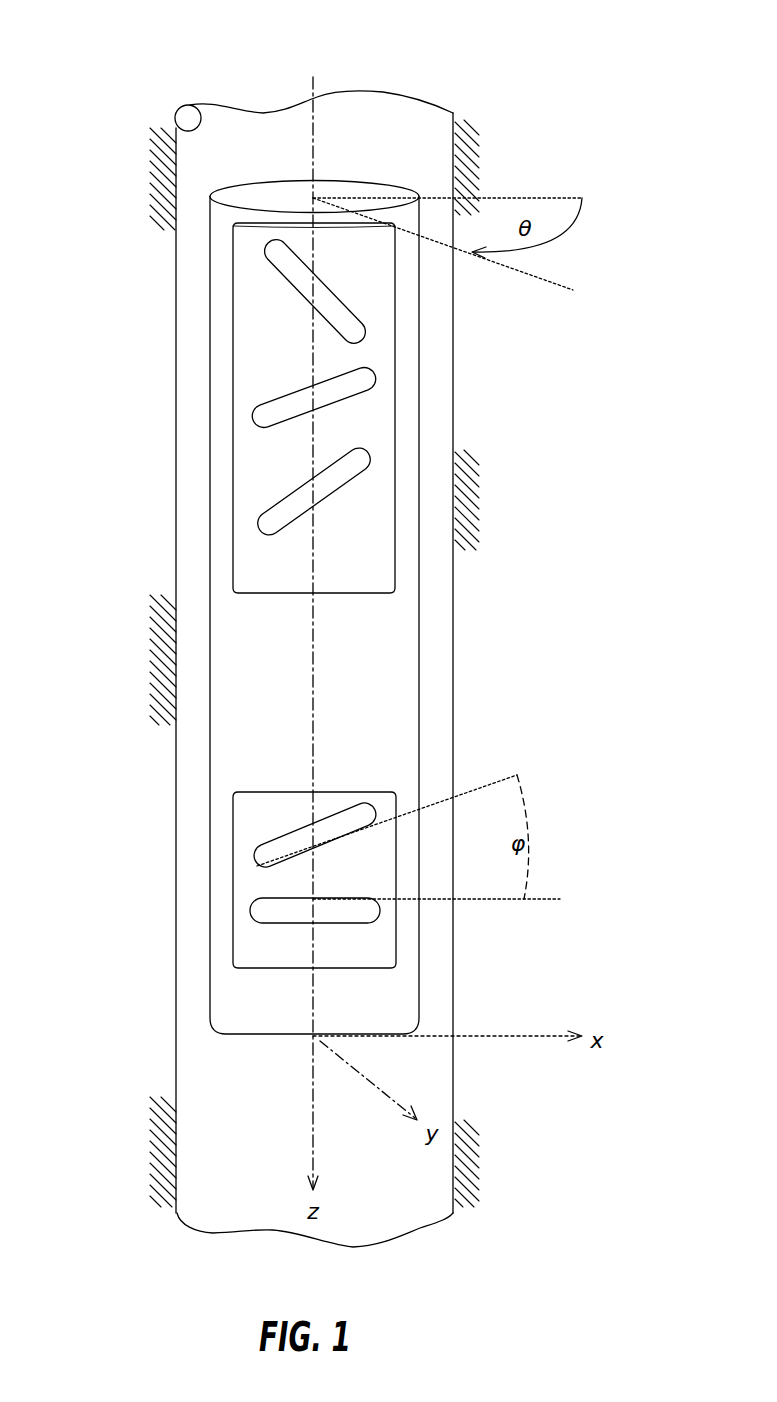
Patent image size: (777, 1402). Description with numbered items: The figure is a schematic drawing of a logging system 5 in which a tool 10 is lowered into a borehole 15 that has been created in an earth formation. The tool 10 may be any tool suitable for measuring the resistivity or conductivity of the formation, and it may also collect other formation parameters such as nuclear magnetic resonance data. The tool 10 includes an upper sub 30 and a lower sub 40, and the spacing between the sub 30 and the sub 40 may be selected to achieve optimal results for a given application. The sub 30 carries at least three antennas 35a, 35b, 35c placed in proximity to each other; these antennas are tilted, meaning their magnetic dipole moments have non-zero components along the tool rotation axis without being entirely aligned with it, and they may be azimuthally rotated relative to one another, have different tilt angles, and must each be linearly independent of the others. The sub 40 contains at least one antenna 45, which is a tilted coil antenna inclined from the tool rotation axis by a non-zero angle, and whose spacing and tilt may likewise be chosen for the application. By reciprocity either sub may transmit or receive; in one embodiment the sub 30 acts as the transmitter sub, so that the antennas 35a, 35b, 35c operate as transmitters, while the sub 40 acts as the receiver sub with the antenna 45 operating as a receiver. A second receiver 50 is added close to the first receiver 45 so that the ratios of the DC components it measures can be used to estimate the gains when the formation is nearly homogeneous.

The logging system 5 is at (548, 68).
The tool 10 is at (387, 184).
The borehole 15 is at (187, 102).
The sub 30 is at (395, 506).
The antenna 35a is at (277, 258).
The antenna 35b is at (257, 422).
The antenna 35c is at (268, 515).
The sub 40 is at (396, 944).
The antenna 45 is at (263, 842).
The second receiver 50 is at (260, 915).